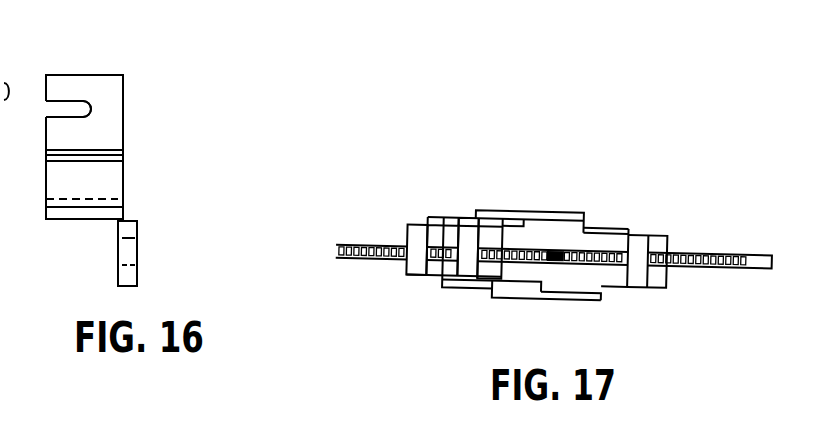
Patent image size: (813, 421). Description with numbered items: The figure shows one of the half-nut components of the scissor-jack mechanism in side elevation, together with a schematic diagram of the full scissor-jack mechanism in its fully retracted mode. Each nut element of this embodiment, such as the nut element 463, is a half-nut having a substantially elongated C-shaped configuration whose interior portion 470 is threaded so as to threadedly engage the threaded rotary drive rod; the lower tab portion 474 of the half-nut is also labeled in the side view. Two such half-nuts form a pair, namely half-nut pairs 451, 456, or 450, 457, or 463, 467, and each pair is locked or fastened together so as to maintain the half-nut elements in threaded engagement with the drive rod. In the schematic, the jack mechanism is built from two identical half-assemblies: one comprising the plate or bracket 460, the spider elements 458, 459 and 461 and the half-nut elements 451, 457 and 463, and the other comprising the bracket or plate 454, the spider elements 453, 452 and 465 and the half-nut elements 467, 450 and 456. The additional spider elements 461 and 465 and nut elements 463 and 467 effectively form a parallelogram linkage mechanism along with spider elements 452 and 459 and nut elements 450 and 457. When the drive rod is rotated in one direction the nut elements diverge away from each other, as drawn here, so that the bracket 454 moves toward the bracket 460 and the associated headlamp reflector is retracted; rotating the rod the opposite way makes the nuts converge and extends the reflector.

In FIG. 17, the nut element 450 is at (494, 236).
In FIG. 17, the nut element 451 is at (642, 243).
In FIG. 17, the spider element 452 is at (523, 218).
In FIG. 17, the spider element 453 is at (612, 226).
In FIG. 17, the bracket or plate 454 is at (575, 214).
In FIG. 17, the nut element 456 is at (661, 245).
In FIG. 17, the nut element 457 is at (473, 232).
In FIG. 17, the spider element 458 is at (625, 289).
In FIG. 17, the spider element 459 is at (527, 289).
In FIG. 16, the bracket or plate 460 is at (135, 278).
In FIG. 17, the bracket or plate 460 is at (594, 300).
In FIG. 17, the spider element 461 is at (472, 286).
In FIG. 16, the nut element 463 is at (111, 75).
In FIG. 17, the nut element 463 is at (414, 234).
In FIG. 17, the spider element 465 is at (446, 222).
In FIG. 17, the nut element 467 is at (436, 233).
In FIG. 16, the interior portion 470 is at (88, 115).
In FIG. 16, the tab 474 is at (138, 248).